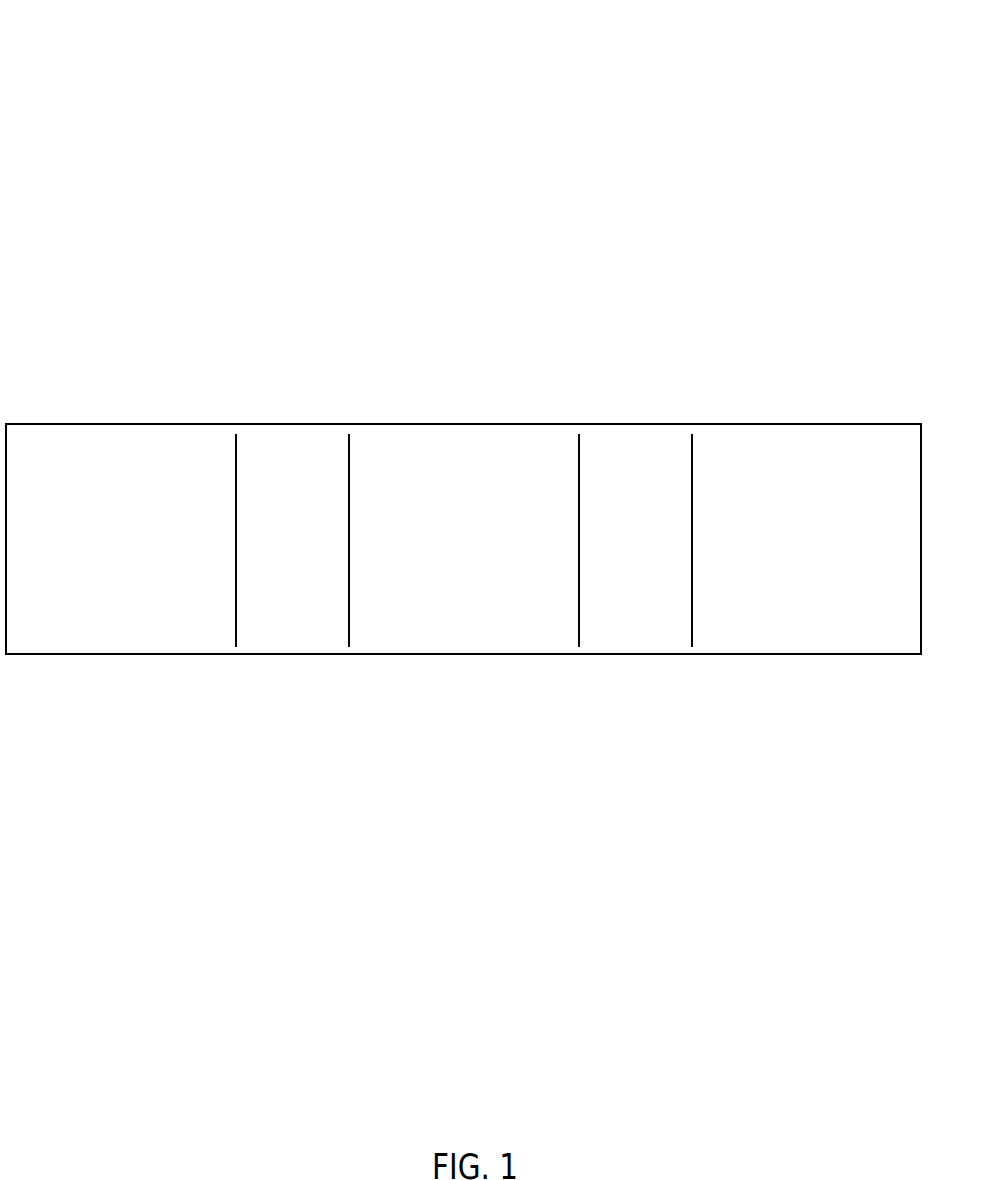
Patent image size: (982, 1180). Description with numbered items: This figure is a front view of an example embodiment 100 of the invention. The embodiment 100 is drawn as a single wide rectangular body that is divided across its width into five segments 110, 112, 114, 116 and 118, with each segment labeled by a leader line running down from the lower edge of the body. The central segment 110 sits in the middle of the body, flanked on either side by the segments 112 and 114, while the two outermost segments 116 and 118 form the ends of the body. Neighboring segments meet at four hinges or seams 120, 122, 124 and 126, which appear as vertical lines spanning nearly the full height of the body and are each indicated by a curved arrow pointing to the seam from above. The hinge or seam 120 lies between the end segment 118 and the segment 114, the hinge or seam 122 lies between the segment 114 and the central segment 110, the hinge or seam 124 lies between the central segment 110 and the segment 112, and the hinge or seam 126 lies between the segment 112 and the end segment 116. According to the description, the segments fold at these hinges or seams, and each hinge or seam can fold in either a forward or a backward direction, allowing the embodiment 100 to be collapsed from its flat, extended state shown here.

The example embodiment 100 is at (110, 40).
The segment 110 is at (450, 598).
The segment 112 is at (643, 625).
The segment 114 is at (295, 625).
The segment 116 is at (843, 625).
The segment 118 is at (93, 625).
The hinge or seam 120 is at (237, 462).
The hinge or seam 122 is at (350, 462).
The hinge or seam 124 is at (581, 462).
The hinge or seam 126 is at (694, 462).